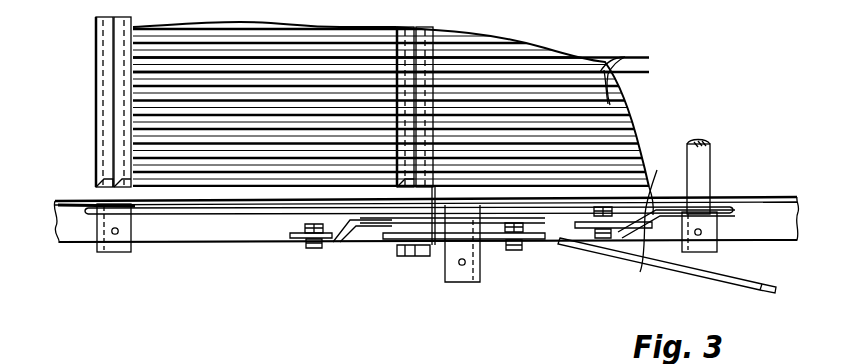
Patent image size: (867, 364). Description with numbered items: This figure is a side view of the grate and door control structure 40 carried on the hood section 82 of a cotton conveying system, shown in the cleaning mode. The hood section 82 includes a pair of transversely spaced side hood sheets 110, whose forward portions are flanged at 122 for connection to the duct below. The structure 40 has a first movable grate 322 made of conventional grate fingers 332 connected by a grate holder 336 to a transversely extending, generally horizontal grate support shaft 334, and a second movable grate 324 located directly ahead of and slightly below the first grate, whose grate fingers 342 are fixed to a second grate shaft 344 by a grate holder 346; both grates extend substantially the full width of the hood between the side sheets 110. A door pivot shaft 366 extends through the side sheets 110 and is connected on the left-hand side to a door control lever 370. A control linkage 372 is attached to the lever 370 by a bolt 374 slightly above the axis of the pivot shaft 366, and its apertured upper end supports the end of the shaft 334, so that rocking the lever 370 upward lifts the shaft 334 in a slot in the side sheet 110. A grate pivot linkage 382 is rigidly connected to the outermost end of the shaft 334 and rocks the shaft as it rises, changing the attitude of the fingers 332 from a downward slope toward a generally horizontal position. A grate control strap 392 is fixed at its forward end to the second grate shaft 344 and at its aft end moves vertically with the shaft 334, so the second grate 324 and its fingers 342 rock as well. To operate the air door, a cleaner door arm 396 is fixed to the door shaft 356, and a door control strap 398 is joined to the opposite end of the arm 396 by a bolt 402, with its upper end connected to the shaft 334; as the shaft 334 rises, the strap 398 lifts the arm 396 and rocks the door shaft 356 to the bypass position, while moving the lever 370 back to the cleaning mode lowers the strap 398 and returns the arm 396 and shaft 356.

The grate and door control structure 40 is at (423, 233).
The hood section 82 is at (281, 94).
The side hood sheets 110 is at (74, 200).
The flanges 122 is at (200, 232).
The first movable grate 322 is at (576, 58).
The second movable grate 324 is at (358, 75).
The grate fingers 332 is at (612, 70).
The grate support shaft 334 is at (418, 258).
The grate holder 336 is at (418, 52).
The grate fingers 342 is at (218, 108).
The second grate shaft 344 is at (92, 214).
The grate holder 346 is at (110, 47).
The door shaft 356 is at (712, 150).
The door pivot shaft 366 is at (458, 285).
The door control lever 370 is at (705, 282).
The control linkage 372 is at (492, 240).
The bolt 374 is at (515, 250).
The grate pivot linkage 382 is at (330, 248).
The grate control strap 392 is at (183, 218).
The cleaner door arm 396 is at (648, 248).
The door control strap 398 is at (566, 245).
The bolt 402 is at (653, 190).